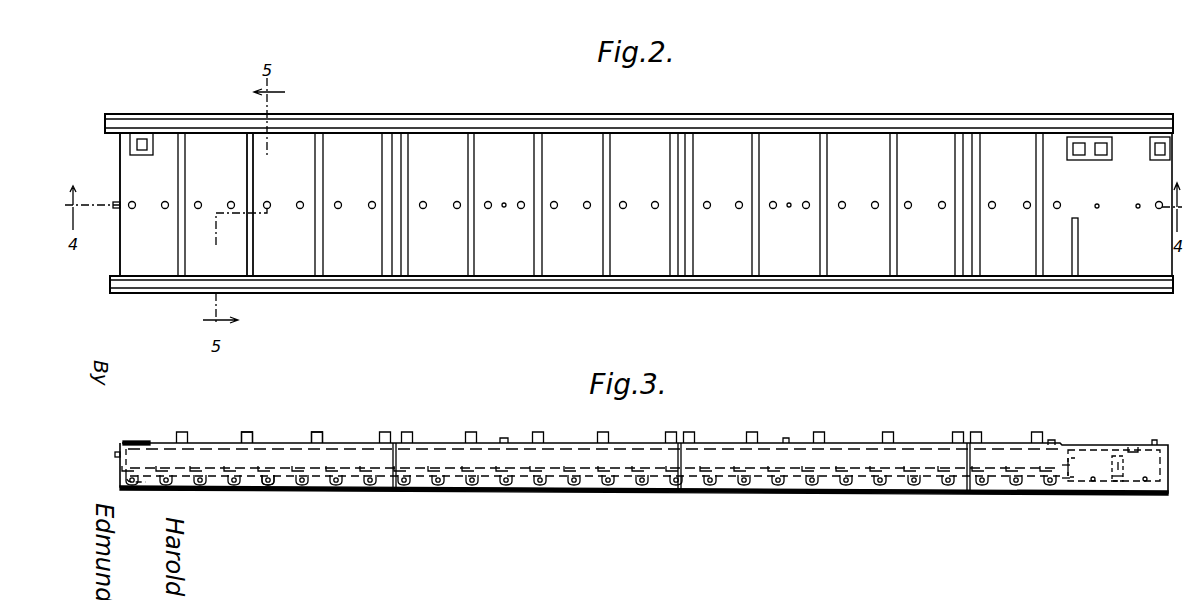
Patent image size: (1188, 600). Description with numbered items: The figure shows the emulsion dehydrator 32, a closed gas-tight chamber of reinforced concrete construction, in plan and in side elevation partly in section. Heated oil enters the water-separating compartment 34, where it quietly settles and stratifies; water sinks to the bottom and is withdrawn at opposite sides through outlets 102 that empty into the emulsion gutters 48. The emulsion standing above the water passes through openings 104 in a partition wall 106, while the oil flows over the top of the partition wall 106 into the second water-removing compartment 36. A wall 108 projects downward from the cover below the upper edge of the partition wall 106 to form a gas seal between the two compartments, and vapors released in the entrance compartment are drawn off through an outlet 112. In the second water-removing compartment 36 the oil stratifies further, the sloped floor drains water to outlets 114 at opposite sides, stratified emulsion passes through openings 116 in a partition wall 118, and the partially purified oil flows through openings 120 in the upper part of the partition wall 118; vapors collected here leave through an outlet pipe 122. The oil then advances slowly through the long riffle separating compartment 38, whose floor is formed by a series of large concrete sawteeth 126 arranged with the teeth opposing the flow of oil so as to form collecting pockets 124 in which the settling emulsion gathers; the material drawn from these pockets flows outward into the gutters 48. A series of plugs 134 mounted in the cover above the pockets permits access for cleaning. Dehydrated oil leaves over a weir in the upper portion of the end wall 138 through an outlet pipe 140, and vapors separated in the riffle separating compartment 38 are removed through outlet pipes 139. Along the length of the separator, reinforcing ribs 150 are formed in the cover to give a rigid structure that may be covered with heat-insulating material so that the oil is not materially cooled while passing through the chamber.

In FIG. 3, the emulsion dehydrator 32 is at (640, 442).
In FIG. 3, the water-separating compartment 34 is at (1135, 463).
In FIG. 3, the second water-removing compartment 36 is at (1082, 460).
In FIG. 3, the riffle separating compartment 38 is at (425, 455).
In FIG. 2, the emulsion gutter 48 is at (495, 123).
In FIG. 3, the outlet 102 is at (1145, 481).
In FIG. 3, the opening 104 is at (1112, 476).
In FIG. 3, the partition wall 106 is at (1117, 458).
In FIG. 3, the wall 108 is at (1122, 462).
In FIG. 2, the outlet 112 is at (1138, 209).
In FIG. 3, the outlet 112 is at (1133, 452).
In FIG. 3, the outlet 114 is at (1093, 481).
In FIG. 3, the opening 116 is at (1070, 478).
In FIG. 3, the partition wall 118 is at (1067, 465).
In FIG. 3, the opening 120 is at (1072, 458).
In FIG. 2, the outlet pipe 122 is at (1097, 204).
In FIG. 3, the collecting pocket 124 is at (353, 472).
In FIG. 3, the sawtooth 126 is at (272, 463).
In FIG. 2, the plug 134 is at (457, 208).
In FIG. 2, the end wall 138 is at (120, 252).
In FIG. 2, the outlet pipe 139 is at (504, 200).
In FIG. 3, the outlet pipe 139 is at (503, 440).
In FIG. 2, the outlet pipe 140 is at (115, 208).
In FIG. 2, the reinforcing rib 150 is at (248, 252).
In FIG. 3, the reinforcing rib 150 is at (313, 435).